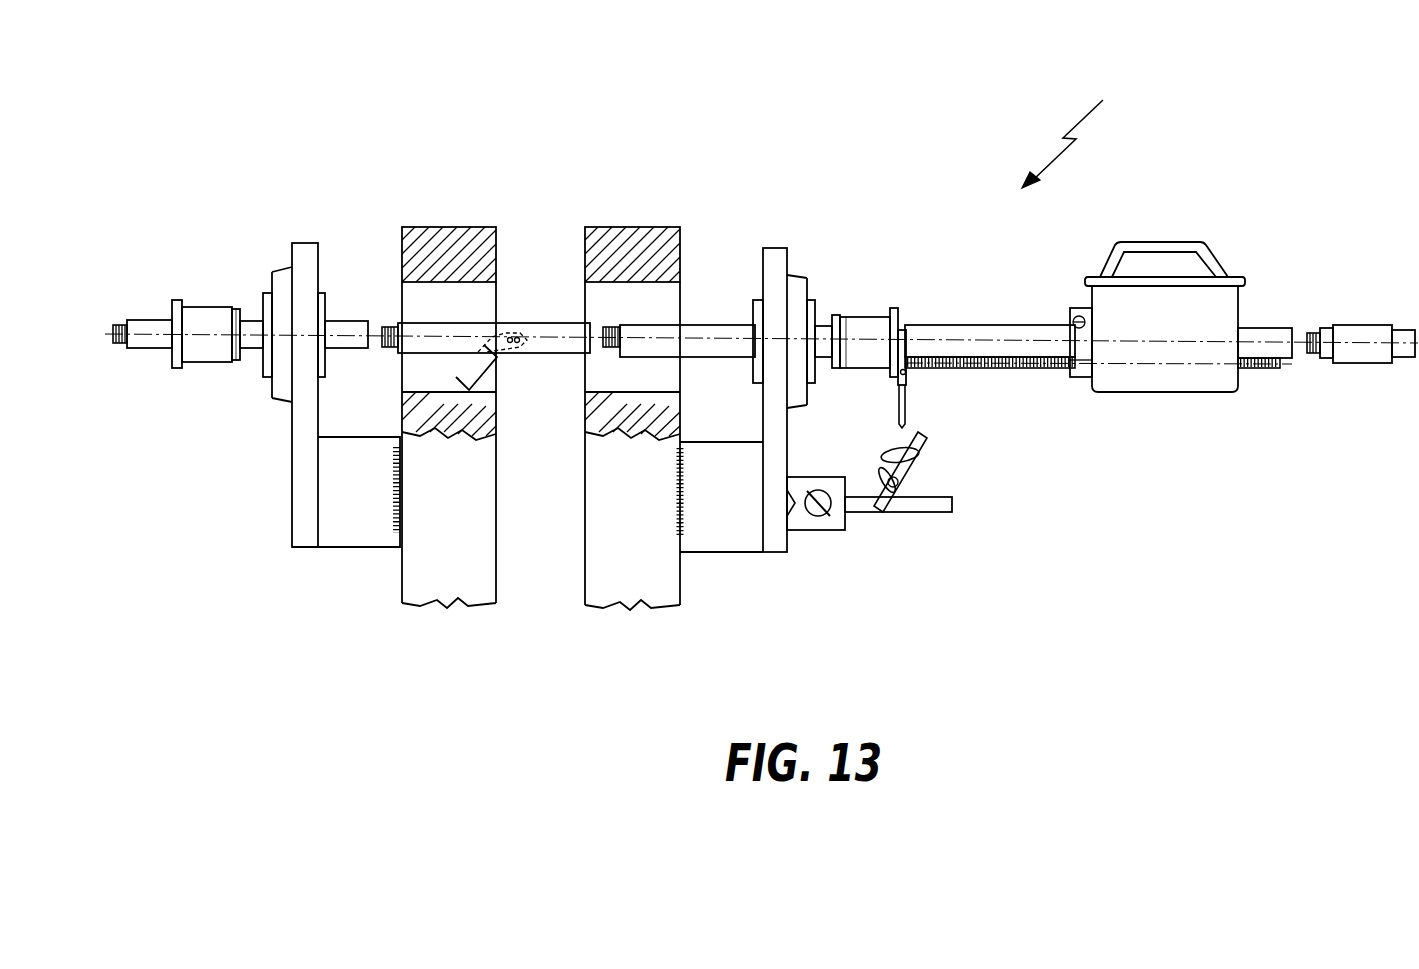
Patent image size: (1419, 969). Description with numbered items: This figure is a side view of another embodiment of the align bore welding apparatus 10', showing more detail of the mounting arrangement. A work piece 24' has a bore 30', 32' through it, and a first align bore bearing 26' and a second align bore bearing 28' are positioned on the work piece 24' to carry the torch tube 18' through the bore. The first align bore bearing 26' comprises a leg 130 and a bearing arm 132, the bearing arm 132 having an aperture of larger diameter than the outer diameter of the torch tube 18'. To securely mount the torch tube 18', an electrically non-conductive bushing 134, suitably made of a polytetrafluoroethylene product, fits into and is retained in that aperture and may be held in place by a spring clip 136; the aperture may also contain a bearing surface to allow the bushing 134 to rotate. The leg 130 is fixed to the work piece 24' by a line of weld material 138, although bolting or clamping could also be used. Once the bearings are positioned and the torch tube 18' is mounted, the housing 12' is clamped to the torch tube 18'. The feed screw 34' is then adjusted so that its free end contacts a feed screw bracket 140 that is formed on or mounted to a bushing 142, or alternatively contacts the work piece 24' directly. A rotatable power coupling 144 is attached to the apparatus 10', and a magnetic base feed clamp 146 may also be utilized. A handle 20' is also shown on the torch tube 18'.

The apparatus 10' is at (1084, 126).
The housing 12' is at (1190, 308).
The torch tube 18' is at (990, 335).
The handle 20' is at (508, 291).
The work piece 24' is at (573, 395).
The first align bore bearing 26' is at (255, 422).
The second align bore bearing 28' is at (765, 427).
The bore 30' is at (676, 278).
The bore 32' is at (459, 284).
The feed screw 34' is at (1092, 399).
The leg 130 is at (386, 534).
The bearing arm 132 is at (298, 455).
The electrically non-conductive bushing 134 is at (205, 305).
The spring clip 136 is at (233, 308).
The line of weld material 138 is at (403, 487).
The feed screw bracket 140 is at (908, 378).
The bushing 142 is at (858, 310).
The rotatable power coupling 144 is at (1352, 360).
The magnetic base feed clamp 146 is at (850, 528).